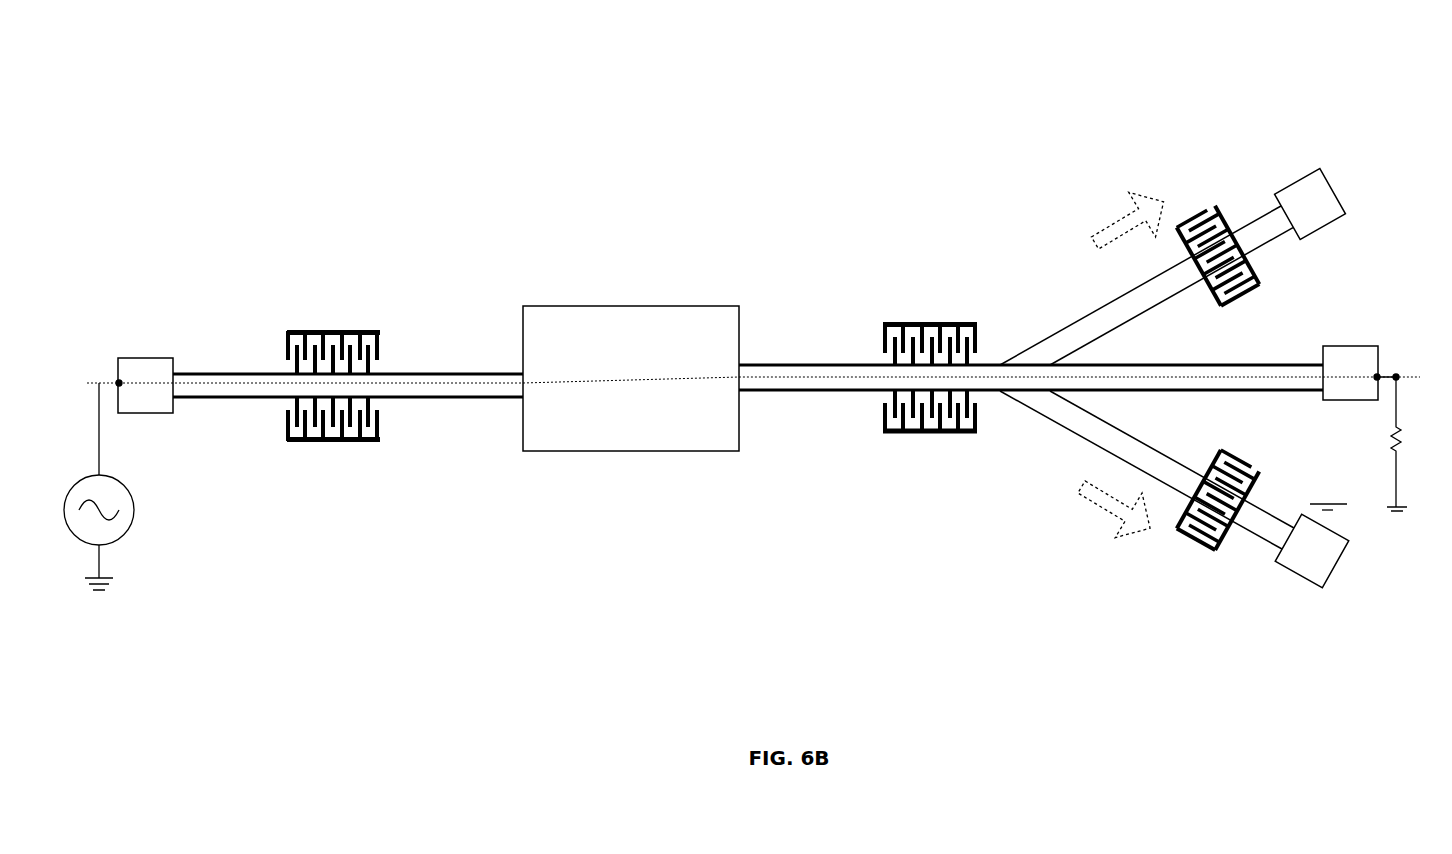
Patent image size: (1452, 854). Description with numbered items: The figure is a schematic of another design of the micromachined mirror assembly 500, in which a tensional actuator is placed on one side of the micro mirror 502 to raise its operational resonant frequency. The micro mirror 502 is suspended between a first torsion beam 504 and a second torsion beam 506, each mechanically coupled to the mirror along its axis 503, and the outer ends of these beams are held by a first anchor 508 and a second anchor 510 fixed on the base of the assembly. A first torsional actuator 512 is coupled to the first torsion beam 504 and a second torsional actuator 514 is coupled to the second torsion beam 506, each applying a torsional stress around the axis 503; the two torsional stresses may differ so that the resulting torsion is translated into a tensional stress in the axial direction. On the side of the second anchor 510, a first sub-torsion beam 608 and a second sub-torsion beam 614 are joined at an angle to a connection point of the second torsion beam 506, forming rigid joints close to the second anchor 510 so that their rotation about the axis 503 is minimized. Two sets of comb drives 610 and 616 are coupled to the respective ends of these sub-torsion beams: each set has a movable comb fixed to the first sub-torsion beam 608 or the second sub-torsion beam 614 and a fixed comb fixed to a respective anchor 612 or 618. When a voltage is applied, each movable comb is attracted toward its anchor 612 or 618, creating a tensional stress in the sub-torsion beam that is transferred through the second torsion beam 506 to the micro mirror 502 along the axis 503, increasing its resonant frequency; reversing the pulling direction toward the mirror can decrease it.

The micromachined mirror assembly 500 is at (757, 93).
The micro mirror 502 is at (631, 378).
The axis 503 is at (1405, 370).
The first torsion beam 504 is at (426, 372).
The second torsion beam 506 is at (855, 363).
The first anchor 508 is at (147, 358).
The second anchor 510 is at (1358, 345).
The first torsional actuator 512 is at (335, 311).
The second torsional actuator 514 is at (922, 301).
The first sub-torsion beam 608 is at (1072, 325).
The set of comb drives 610 is at (1196, 192).
The anchor 612 is at (1302, 175).
The second sub-torsion beam 614 is at (1173, 460).
The set of comb drives 616 is at (1245, 439).
The anchor 618 is at (1337, 528).